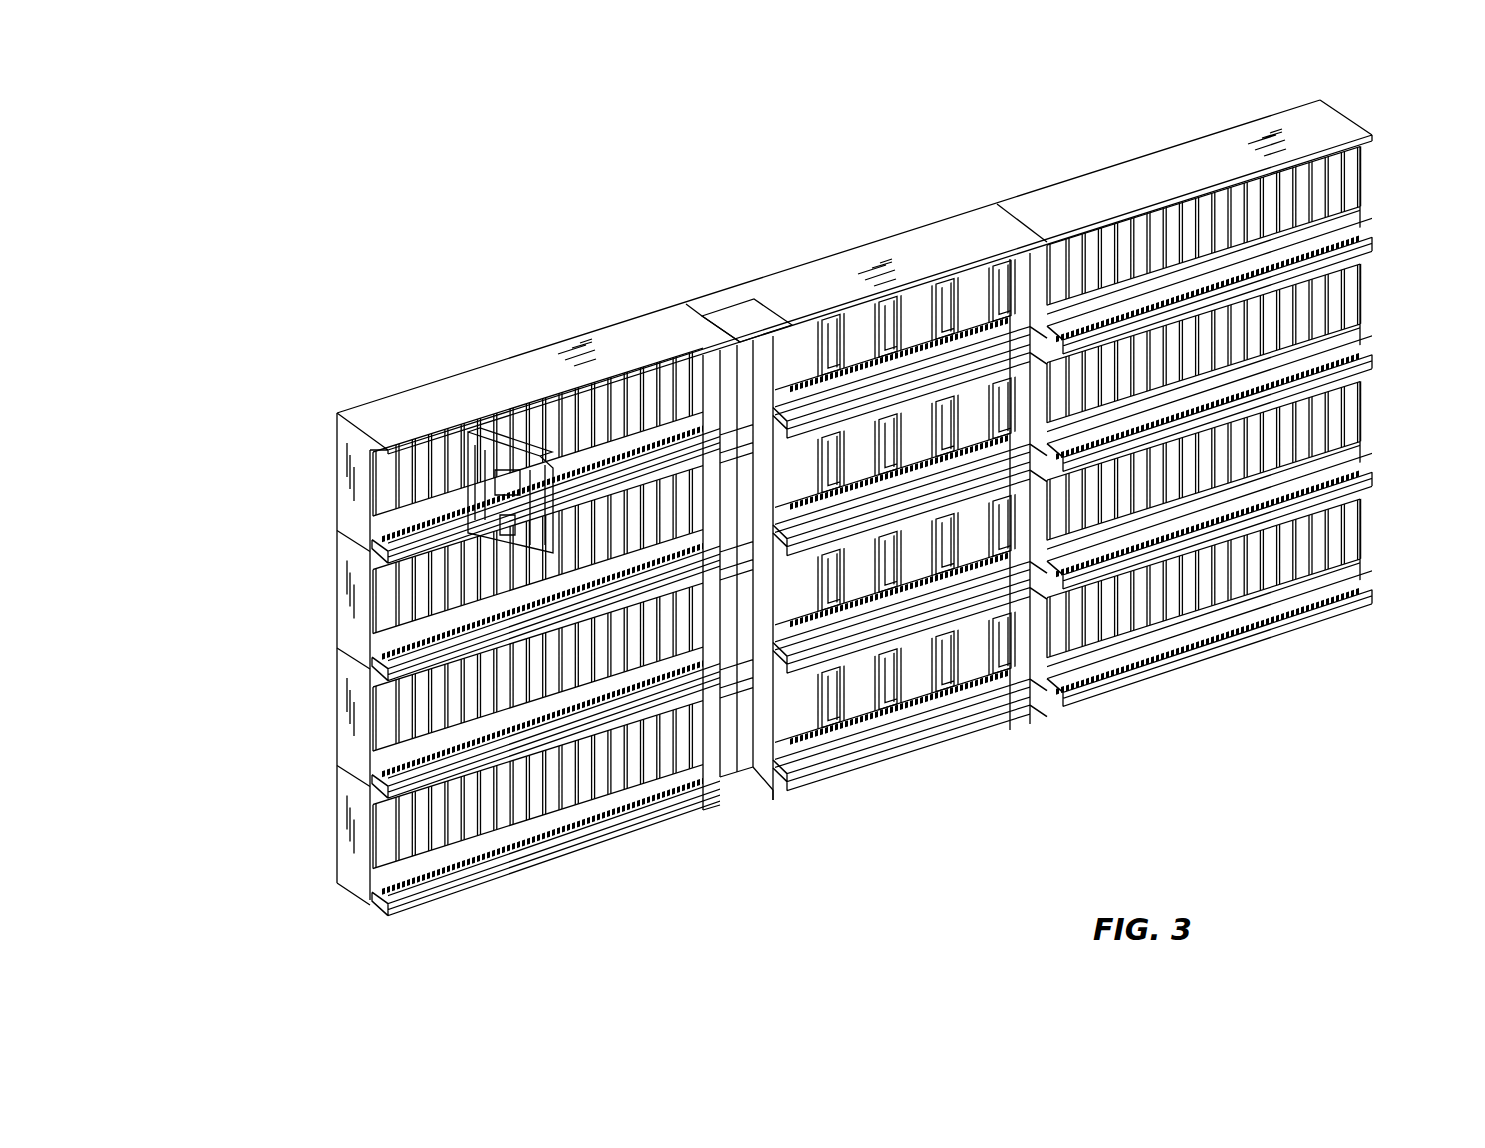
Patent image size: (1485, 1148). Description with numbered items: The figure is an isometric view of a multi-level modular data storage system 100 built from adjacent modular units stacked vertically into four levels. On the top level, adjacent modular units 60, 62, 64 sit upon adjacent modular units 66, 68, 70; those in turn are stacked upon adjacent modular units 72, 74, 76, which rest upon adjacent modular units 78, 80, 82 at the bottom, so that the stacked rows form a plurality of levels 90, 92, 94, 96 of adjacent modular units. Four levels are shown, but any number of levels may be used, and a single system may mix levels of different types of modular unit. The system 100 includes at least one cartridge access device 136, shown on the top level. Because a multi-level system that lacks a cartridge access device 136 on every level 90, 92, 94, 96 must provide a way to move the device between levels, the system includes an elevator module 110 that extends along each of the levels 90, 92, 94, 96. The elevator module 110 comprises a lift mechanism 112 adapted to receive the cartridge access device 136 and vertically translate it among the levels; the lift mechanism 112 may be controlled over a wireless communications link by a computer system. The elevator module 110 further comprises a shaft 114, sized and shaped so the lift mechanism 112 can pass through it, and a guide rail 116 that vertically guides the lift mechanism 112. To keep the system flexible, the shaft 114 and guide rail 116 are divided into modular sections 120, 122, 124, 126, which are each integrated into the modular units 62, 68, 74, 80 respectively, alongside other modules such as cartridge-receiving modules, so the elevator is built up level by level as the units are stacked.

The modular data storage system 100 is at (358, 236).
The modular unit 60 is at (478, 619).
The modular unit 62 is at (910, 493).
The modular unit 64 is at (1215, 417).
The modular unit 66 is at (326, 564).
The modular unit 68 is at (975, 390).
The modular unit 70 is at (1360, 290).
The modular unit 72 is at (326, 681).
The modular unit 74 is at (968, 572).
The modular unit 76 is at (1360, 406).
The modular unit 78 is at (326, 799).
The modular unit 80 is at (899, 762).
The modular unit 82 is at (1202, 653).
The level 90 is at (316, 497).
The level 92 is at (316, 614).
The level 94 is at (316, 730).
The level 96 is at (316, 848).
The elevator module 110 is at (721, 298).
The lift mechanism 112 is at (748, 310).
The shaft 114 is at (764, 800).
The guide rail 116 is at (747, 790).
The modular section 120 is at (722, 383).
The modular section 122 is at (765, 488).
The modular section 124 is at (768, 610).
The modular section 126 is at (726, 742).
The cartridge access device 136 is at (475, 420).